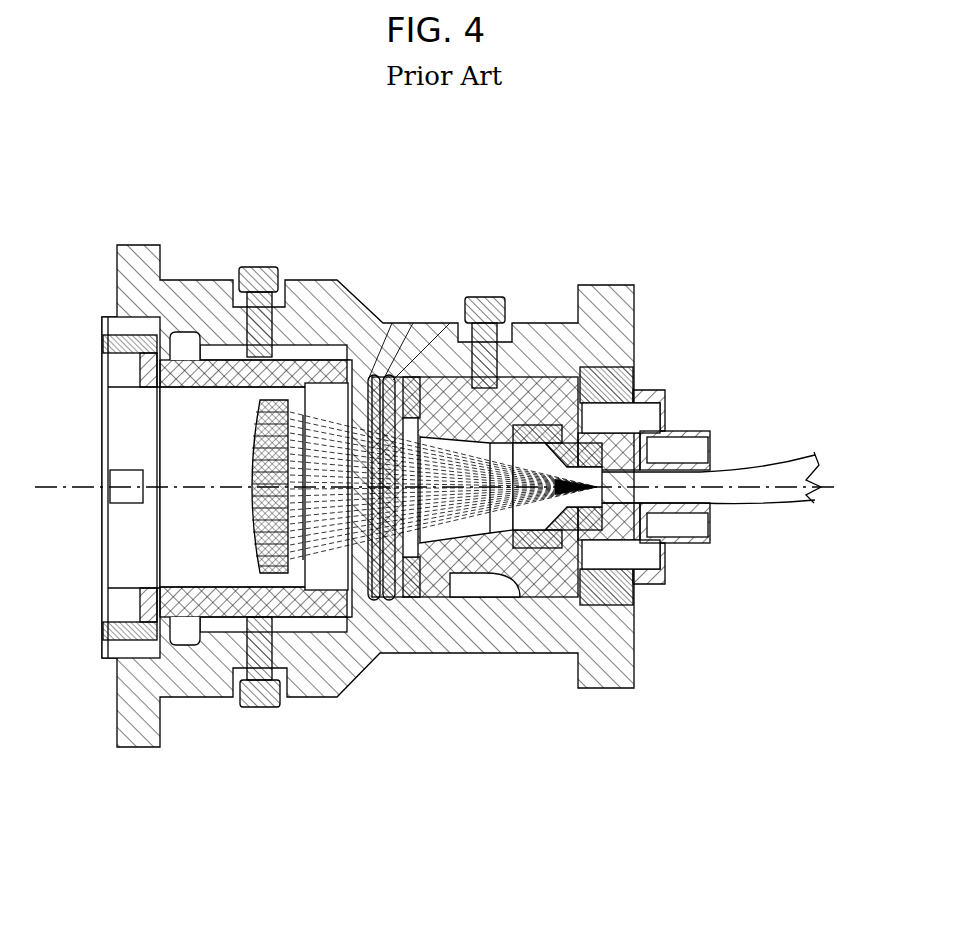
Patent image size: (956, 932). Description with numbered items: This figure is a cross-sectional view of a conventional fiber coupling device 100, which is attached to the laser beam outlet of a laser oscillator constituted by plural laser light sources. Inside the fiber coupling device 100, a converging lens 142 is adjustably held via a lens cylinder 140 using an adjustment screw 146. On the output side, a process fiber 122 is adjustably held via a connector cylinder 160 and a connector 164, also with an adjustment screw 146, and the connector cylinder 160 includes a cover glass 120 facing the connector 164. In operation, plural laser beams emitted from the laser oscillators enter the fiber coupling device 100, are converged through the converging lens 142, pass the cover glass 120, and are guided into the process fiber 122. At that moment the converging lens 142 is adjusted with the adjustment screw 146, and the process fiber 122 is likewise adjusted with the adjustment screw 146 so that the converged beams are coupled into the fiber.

The fiber coupling device 100 is at (400, 474).
The cover glass 120 is at (413, 597).
The process fiber 122 is at (756, 473).
The lens cylinder 140 is at (222, 618).
The converging lens 142 is at (253, 561).
The adjustment screw 146 is at (263, 267).
The connector cylinder 160 is at (522, 393).
The connector 164 is at (697, 450).